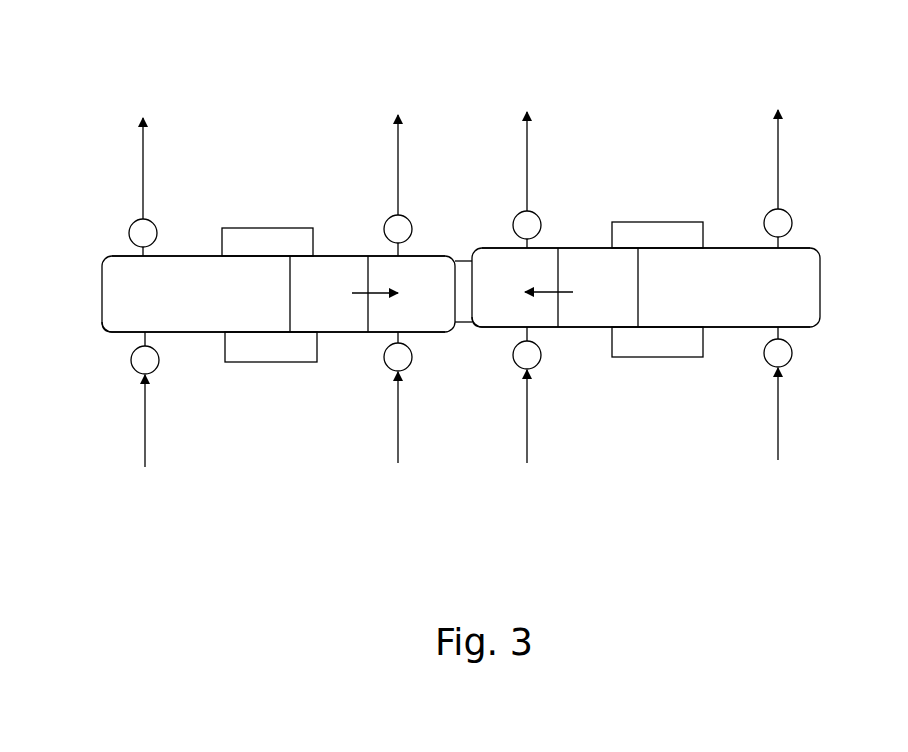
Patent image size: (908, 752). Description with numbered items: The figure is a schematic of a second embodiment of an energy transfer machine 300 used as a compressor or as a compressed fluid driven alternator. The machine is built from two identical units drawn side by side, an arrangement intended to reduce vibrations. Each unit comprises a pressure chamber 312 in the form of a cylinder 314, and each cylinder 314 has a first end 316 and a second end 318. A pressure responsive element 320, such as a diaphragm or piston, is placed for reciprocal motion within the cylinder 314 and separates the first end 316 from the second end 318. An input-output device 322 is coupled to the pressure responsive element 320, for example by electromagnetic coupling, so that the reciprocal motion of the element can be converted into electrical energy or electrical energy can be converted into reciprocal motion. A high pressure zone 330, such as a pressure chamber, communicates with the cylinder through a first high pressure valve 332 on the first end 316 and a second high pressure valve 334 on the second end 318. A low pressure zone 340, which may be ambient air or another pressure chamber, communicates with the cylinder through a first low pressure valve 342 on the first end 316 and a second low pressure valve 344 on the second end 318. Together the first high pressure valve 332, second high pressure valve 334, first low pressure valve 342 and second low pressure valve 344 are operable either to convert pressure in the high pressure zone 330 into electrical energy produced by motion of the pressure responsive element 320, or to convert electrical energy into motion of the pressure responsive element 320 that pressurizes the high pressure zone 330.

The energy transfer machine 300 is at (720, 120).
The pressure chamber 312 is at (202, 256).
The cylinder 314 is at (208, 333).
The first end 316 is at (432, 333).
The second end 318 is at (118, 337).
The pressure responsive element 320 is at (314, 265).
The input-output device 322 is at (286, 228).
The high pressure zone 330 is at (455, 145).
The first high pressure valve 332 is at (409, 220).
The second high pressure valve 334 is at (153, 222).
The low pressure zone 340 is at (462, 441).
The first low pressure valve 342 is at (388, 368).
The second low pressure valve 344 is at (137, 372).